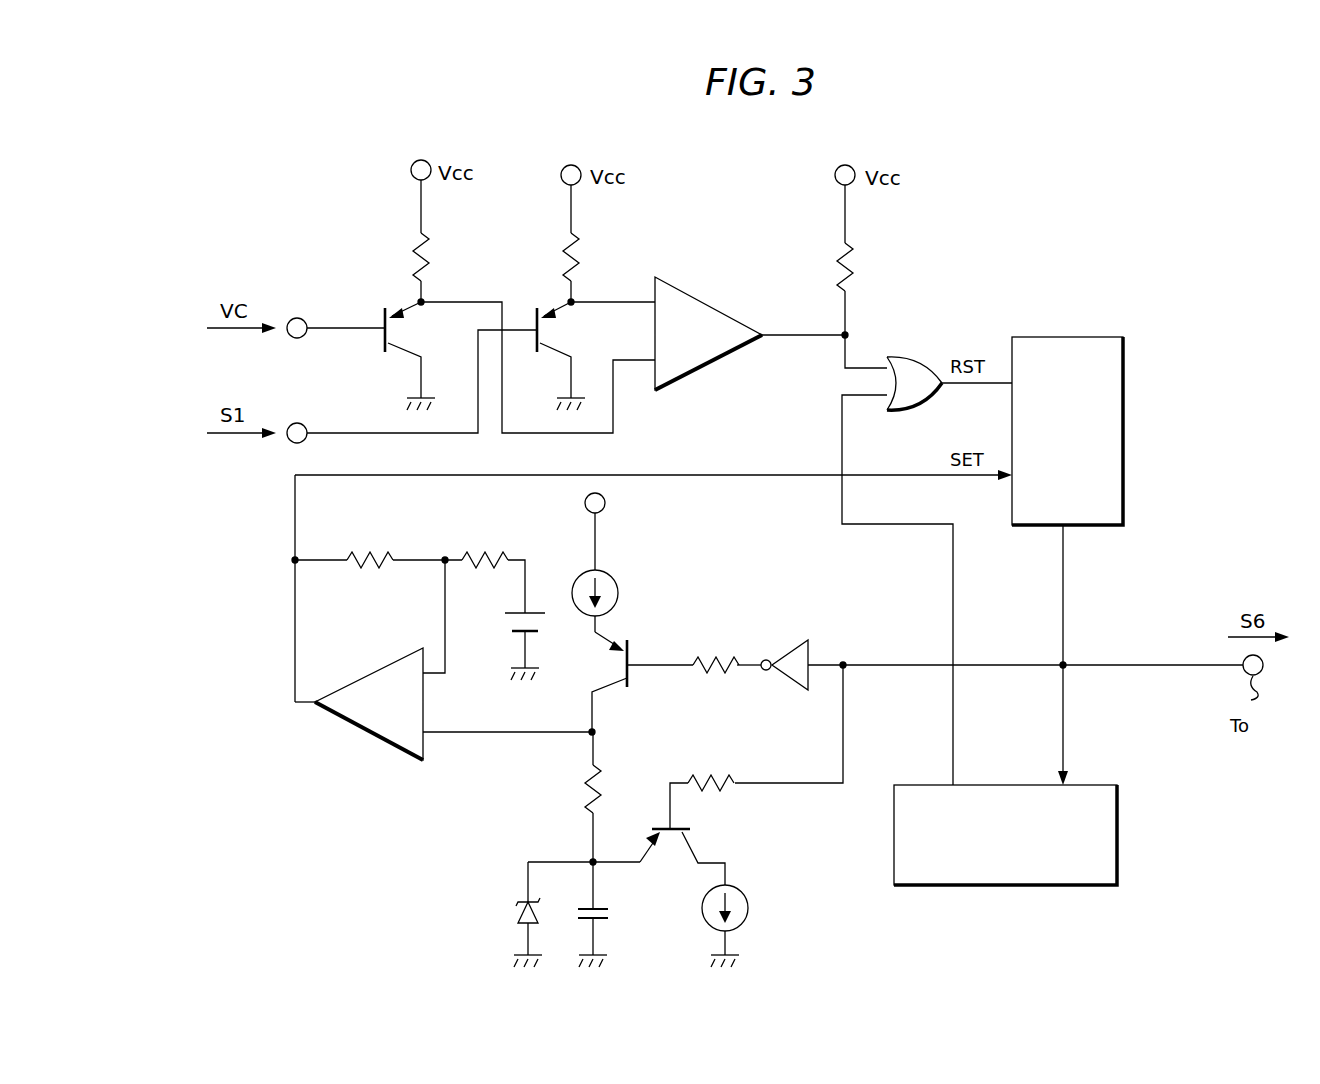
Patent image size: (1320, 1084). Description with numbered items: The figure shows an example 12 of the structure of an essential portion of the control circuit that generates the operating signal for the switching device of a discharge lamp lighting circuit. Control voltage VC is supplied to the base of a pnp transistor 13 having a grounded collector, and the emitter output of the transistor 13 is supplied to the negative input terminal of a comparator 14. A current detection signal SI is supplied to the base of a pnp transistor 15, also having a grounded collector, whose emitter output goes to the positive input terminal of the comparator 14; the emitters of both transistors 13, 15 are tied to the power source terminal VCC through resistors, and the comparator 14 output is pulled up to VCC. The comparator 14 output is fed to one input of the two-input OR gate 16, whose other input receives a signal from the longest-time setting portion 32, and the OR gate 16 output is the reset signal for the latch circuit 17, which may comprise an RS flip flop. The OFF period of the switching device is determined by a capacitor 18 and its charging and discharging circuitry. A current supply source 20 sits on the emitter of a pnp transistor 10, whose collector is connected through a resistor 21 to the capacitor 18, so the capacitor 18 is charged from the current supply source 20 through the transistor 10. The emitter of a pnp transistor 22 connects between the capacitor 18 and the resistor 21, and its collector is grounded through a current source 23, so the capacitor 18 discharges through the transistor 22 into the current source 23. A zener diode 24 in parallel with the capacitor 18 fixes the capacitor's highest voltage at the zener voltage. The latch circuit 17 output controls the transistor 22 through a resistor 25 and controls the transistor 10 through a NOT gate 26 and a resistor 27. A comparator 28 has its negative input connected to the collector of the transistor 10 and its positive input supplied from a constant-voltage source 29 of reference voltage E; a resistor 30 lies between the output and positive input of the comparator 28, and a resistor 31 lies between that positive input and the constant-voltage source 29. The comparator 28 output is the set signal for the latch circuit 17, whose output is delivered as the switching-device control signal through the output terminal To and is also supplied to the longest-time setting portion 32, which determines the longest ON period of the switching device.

The pnp transistor 10 is at (630, 683).
The example of the structure of an essential portion of the control circuit 12 is at (1200, 268).
The pnp transistor 13 is at (418, 354).
The comparator 14 is at (704, 303).
The pnp transistor 15 is at (568, 354).
The OR gate 16 is at (898, 358).
The latch circuit 17 is at (1066, 337).
The capacitor 18 is at (602, 915).
The current supply source 20 is at (621, 587).
The resistor 21 is at (574, 796).
The pnp transistor 22 is at (648, 828).
The current source 23 is at (750, 904).
The zener diode 24 is at (518, 916).
The resistor 25 is at (708, 773).
The NOT gate 26 is at (790, 652).
The resistor 27 is at (710, 653).
The comparator 28 is at (370, 667).
The constant-voltage source 29 is at (538, 615).
The resistor 30 is at (362, 551).
The resistor 31 is at (477, 551).
The longest-time setting portion 32 is at (1120, 835).